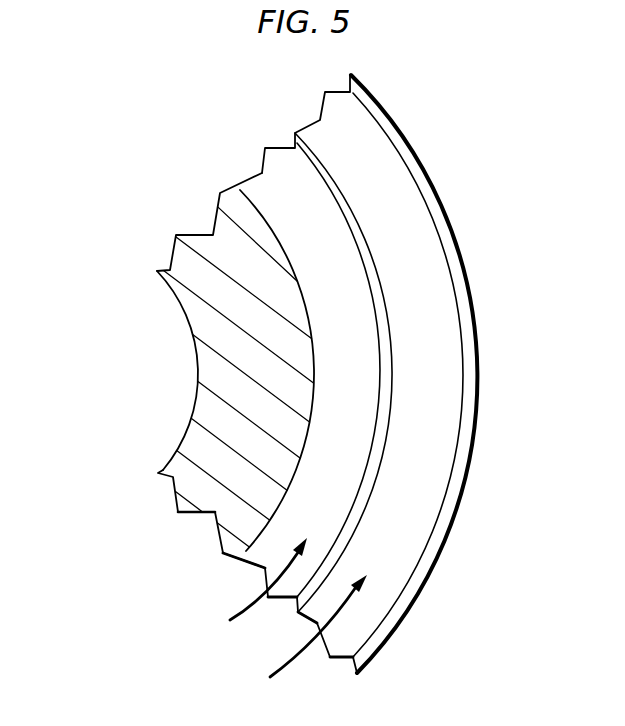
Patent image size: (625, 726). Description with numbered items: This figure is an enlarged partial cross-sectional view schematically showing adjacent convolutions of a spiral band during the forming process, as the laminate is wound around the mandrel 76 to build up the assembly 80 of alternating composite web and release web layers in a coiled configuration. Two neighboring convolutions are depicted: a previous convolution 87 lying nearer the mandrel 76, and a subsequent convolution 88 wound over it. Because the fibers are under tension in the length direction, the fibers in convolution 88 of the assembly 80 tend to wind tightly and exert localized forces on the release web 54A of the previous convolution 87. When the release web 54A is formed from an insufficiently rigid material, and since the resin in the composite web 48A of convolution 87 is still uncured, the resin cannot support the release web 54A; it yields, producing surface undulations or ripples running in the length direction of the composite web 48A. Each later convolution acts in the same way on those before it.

The composite web 48A is at (272, 186).
The release web 54A is at (300, 140).
The mandrel 76 is at (207, 335).
The assembly 80 is at (474, 128).
The previous convolution 87 is at (255, 591).
The convolution 88 is at (306, 637).